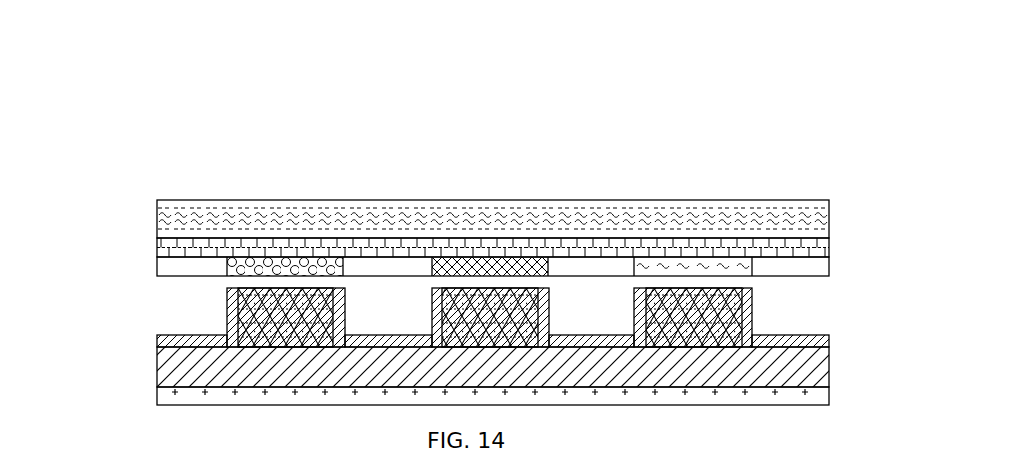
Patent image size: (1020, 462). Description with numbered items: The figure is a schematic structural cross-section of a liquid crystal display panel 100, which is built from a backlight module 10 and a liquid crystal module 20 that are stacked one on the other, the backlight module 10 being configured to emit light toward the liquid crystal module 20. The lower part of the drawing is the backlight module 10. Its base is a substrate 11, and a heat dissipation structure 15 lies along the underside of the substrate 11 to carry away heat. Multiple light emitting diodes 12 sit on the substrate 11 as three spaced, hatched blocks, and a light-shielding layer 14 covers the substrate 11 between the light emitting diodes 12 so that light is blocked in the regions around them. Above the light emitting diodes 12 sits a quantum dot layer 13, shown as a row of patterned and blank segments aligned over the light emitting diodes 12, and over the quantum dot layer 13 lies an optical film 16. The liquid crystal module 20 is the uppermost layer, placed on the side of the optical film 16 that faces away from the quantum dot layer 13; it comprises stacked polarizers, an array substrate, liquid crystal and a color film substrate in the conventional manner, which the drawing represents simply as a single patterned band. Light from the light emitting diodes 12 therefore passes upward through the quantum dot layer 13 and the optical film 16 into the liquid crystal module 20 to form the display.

The liquid crystal display panel 100 is at (93, 31).
The backlight module 10 is at (88, 375).
The substrate 11 is at (170, 360).
The light emitting diodes 12 is at (257, 340).
The quantum dot layer 13 is at (170, 268).
The light-shielding layer 14 is at (177, 340).
The heat dissipation structure 15 is at (170, 398).
The optical film 16 is at (168, 254).
The liquid crystal module 20 is at (820, 222).